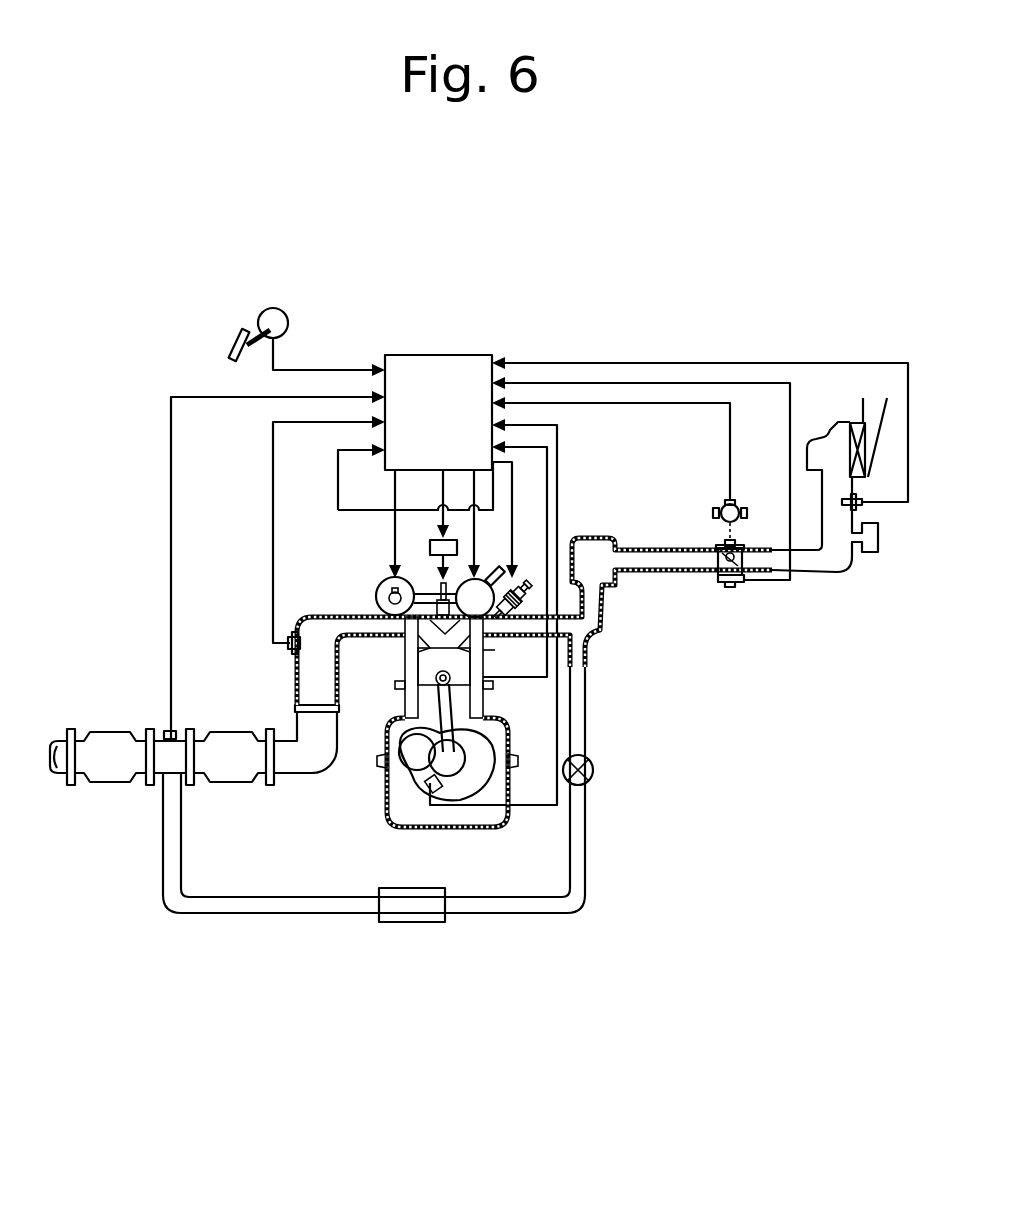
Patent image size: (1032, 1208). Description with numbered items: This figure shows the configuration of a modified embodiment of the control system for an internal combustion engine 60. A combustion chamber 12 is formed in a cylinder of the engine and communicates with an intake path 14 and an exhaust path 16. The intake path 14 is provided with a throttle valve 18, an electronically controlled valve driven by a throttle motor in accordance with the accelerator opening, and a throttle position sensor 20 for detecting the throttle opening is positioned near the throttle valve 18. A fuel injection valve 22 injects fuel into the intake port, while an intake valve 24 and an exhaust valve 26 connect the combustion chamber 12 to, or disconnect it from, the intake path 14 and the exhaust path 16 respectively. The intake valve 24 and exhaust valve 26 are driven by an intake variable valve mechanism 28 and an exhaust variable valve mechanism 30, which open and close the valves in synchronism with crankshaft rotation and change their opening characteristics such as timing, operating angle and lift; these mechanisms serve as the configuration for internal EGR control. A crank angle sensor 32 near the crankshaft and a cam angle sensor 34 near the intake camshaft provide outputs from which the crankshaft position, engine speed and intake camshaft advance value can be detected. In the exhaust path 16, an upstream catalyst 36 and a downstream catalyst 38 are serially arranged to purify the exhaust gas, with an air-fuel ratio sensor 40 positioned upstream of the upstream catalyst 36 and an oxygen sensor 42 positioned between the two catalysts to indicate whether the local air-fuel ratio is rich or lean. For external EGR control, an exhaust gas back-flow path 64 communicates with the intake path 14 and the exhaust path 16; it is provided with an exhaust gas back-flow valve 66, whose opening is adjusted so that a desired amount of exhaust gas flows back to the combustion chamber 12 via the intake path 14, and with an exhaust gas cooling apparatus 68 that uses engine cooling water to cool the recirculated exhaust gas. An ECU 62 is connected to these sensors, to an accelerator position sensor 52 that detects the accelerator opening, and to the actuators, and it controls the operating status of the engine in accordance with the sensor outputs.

The combustion chamber 12 is at (405, 655).
The intake path 14 is at (590, 645).
The exhaust path 16 is at (296, 694).
The throttle valve 18 is at (718, 566).
The throttle position sensor 20 is at (738, 504).
The fuel injection valve 22 is at (522, 572).
The intake valve 24 is at (497, 638).
The exhaust valve 26 is at (400, 630).
The intake variable valve mechanism 28 is at (462, 580).
The exhaust variable valve mechanism 30 is at (384, 578).
The crank angle sensor 32 is at (423, 778).
The cam angle sensor 34 is at (488, 572).
The upstream catalyst 36 is at (234, 782).
The downstream catalyst 38 is at (112, 782).
The air-fuel ratio sensor 40 is at (289, 650).
The oxygen sensor 42 is at (169, 731).
The accelerator position sensor 52 is at (266, 310).
The internal combustion engine 60 is at (390, 830).
The ECU 62 is at (446, 355).
The exhaust gas back-flow path 64 is at (587, 836).
The exhaust gas back-flow valve 66 is at (595, 771).
The exhaust gas cooling apparatus 68 is at (408, 923).